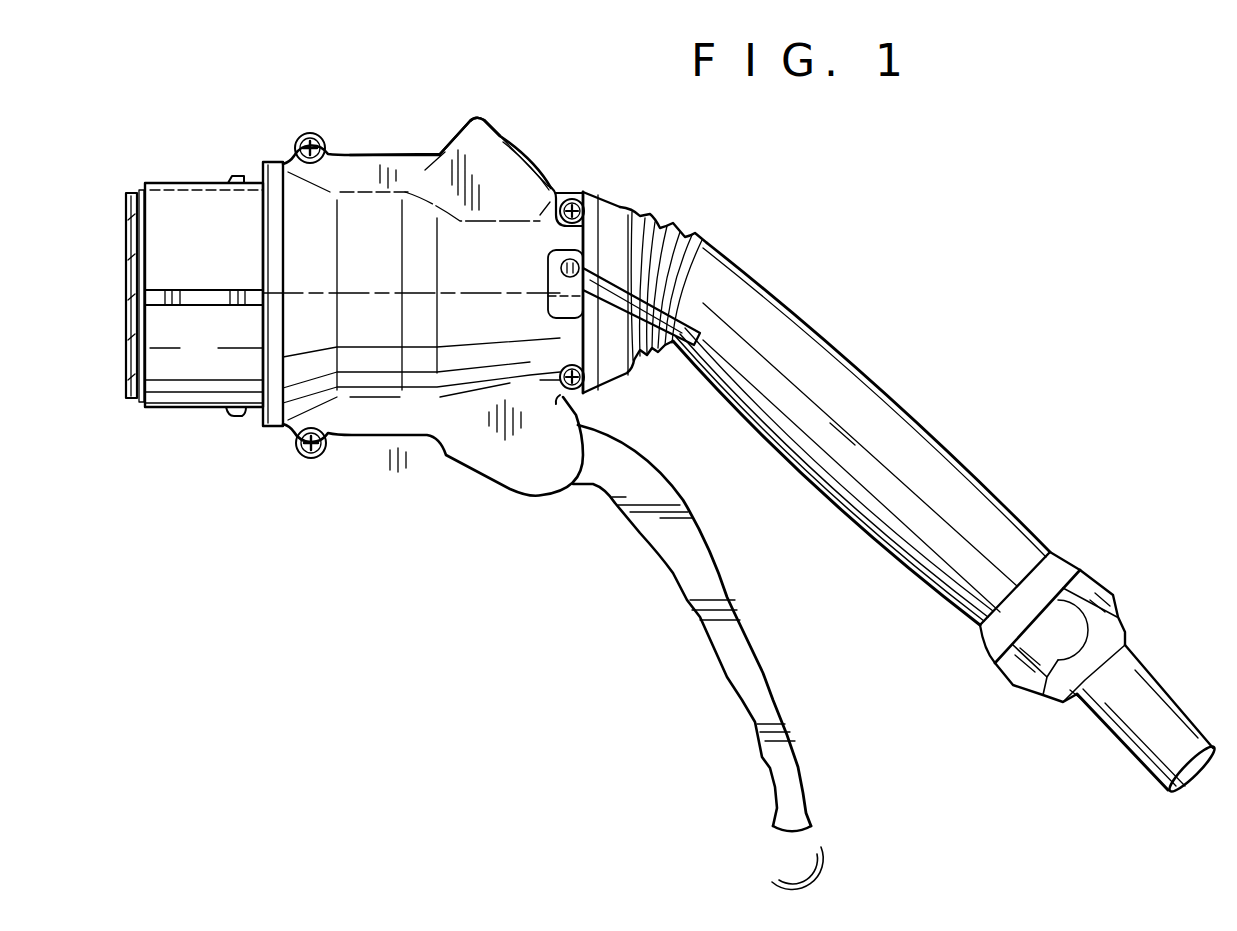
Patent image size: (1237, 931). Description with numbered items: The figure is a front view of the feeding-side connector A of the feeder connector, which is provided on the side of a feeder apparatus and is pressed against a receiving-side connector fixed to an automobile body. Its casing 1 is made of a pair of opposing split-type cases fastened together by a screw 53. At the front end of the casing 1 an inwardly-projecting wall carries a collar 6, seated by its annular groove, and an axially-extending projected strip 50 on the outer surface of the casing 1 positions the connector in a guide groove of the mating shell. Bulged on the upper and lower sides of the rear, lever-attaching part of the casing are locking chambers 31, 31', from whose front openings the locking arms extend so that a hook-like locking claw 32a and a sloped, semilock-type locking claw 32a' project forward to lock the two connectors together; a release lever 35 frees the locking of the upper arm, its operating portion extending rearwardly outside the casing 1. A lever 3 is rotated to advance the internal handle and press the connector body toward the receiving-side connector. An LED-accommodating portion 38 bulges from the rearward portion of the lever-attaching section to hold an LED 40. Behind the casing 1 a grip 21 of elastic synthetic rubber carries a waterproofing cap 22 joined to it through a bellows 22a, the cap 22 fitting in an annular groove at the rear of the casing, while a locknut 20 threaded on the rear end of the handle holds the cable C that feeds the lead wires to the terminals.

The casing 1 is at (410, 155).
The lever 3 is at (755, 675).
The collar 6 is at (122, 363).
The locknut 20 is at (1100, 596).
The grip 21 is at (943, 480).
The waterproofing cap 22 is at (618, 203).
The bellows 22a is at (685, 228).
The locking chamber 31 is at (411, 267).
The locking chamber 31' is at (433, 422).
The locking claw 32a is at (236, 148).
The locking claw 32a' is at (212, 450).
The release lever 35 is at (690, 318).
The LED-accommodating portion 38 is at (490, 134).
The LED 40 is at (543, 163).
The projected strip 50 is at (200, 298).
The screw 53 is at (320, 458).
The feeding-side connector A is at (832, 205).
The cable C is at (1170, 694).